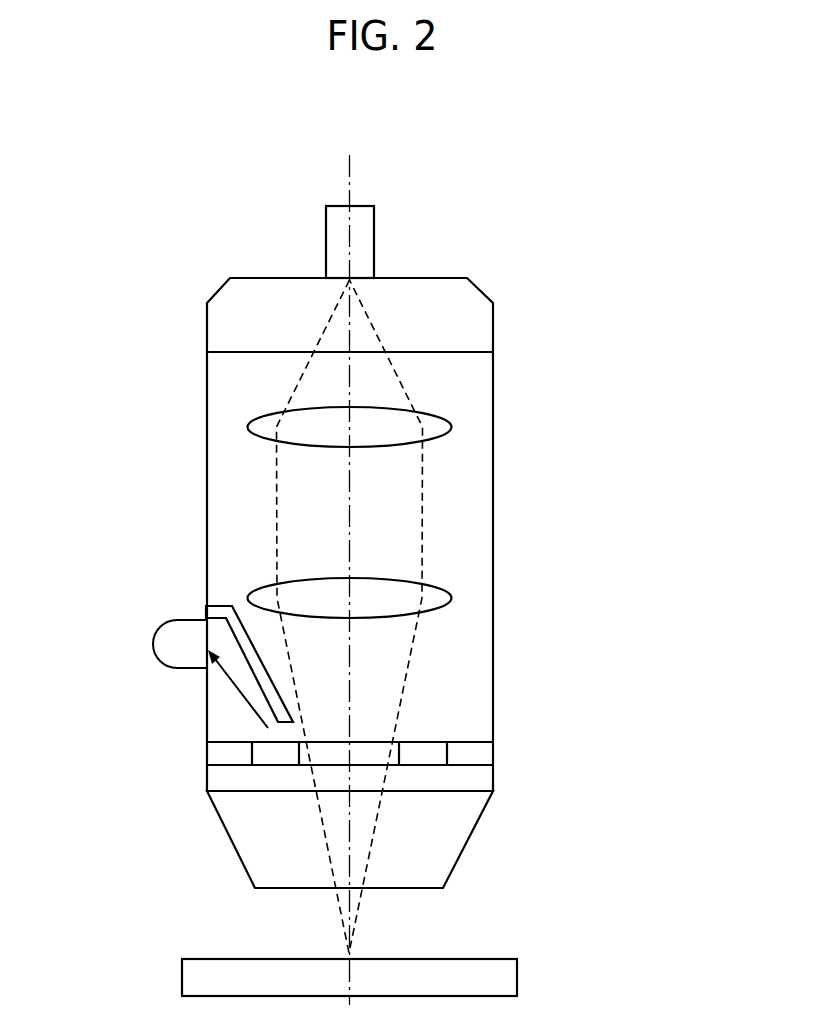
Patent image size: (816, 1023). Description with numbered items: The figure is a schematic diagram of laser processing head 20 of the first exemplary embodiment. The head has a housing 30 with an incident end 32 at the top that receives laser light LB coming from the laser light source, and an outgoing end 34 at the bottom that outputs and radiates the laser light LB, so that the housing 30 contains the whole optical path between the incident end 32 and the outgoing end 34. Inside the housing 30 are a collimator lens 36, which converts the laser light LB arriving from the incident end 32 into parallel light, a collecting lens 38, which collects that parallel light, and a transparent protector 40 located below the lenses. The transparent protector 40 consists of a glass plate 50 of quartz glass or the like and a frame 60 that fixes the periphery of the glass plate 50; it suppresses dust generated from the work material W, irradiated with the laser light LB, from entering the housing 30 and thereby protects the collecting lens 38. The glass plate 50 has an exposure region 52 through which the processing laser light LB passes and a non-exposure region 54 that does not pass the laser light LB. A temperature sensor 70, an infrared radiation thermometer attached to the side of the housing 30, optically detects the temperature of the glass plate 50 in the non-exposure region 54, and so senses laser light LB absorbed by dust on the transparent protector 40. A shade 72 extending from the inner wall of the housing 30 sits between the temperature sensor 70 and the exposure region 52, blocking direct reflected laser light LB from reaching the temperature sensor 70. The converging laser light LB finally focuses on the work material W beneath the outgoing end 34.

The laser processing head 20 is at (545, 278).
The housing 30 is at (207, 462).
The incident end 32 is at (363, 206).
The outgoing end 34 is at (420, 888).
The collimator lens 36 is at (452, 427).
The collecting lens 38 is at (452, 598).
The transparent protector 40 is at (610, 738).
The glass plate 50 is at (559, 772).
The exposure region 52 is at (375, 752).
The non-exposure region 54 is at (420, 753).
The frame 60 is at (470, 755).
The temperature sensor 70 is at (160, 627).
The shade 72 is at (232, 606).
The laser light LB is at (317, 812).
The work material W is at (223, 958).